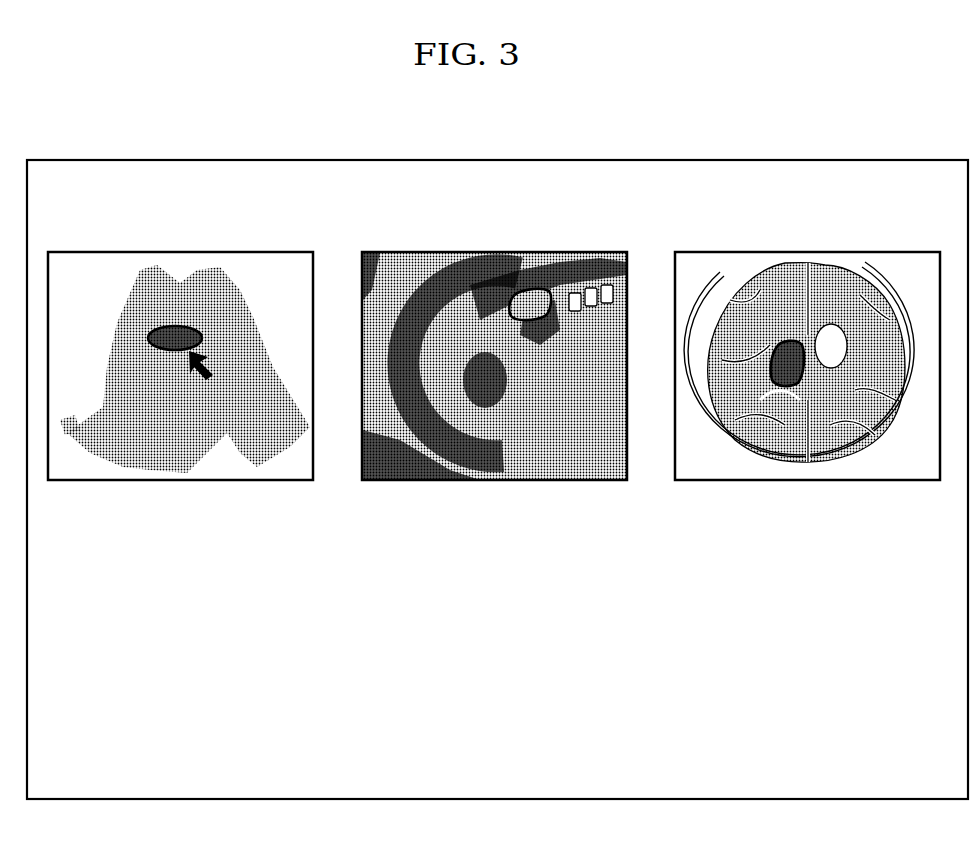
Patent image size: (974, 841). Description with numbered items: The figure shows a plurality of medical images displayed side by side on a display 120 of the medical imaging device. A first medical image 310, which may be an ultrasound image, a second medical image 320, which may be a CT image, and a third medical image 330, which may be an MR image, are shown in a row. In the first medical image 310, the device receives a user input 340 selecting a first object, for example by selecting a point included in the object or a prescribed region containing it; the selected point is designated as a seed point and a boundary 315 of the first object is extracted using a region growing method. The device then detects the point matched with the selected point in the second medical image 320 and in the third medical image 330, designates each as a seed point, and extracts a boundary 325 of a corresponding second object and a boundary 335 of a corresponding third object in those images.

The display 120 is at (883, 160).
The first medical image 310 is at (263, 480).
The boundary of the first object 315 is at (150, 330).
The second medical image 320 is at (578, 480).
The boundary of the second object 325 is at (547, 318).
The third medical image 330 is at (850, 480).
The boundary of the third object 335 is at (780, 378).
The user input 340 is at (188, 353).